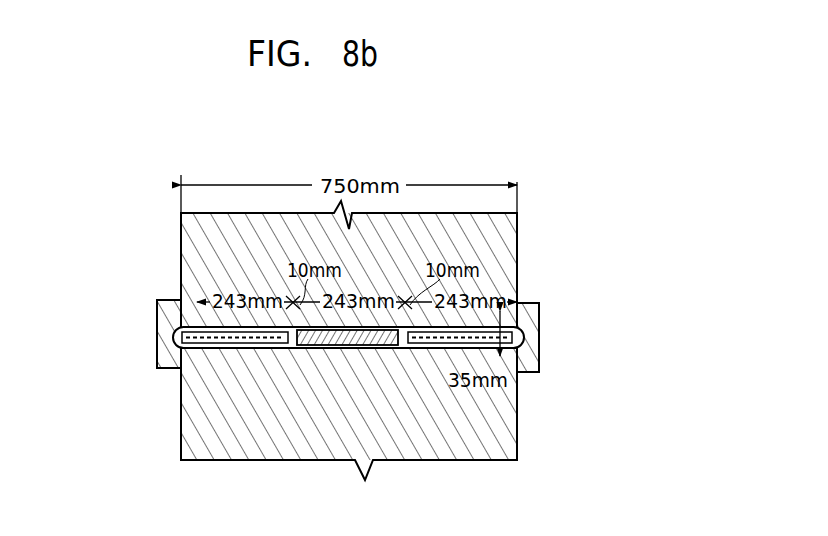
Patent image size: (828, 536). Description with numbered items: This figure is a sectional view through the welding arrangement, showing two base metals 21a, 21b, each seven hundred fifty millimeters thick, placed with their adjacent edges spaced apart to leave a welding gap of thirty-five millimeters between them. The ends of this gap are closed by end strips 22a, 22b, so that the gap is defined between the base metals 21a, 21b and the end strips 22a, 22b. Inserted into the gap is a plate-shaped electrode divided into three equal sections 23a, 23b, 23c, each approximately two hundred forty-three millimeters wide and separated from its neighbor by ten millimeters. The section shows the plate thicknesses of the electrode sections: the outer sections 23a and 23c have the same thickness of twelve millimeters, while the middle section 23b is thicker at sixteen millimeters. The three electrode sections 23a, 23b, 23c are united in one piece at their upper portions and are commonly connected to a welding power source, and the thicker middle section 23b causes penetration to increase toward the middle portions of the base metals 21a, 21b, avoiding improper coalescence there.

The base metal 21a is at (288, 460).
The base metal 21b is at (486, 213).
The end strip 22a is at (157, 334).
The end strip 22b is at (541, 343).
The electrode section 23a is at (238, 343).
The electrode section 23b is at (342, 345).
The electrode section 23c is at (450, 343).